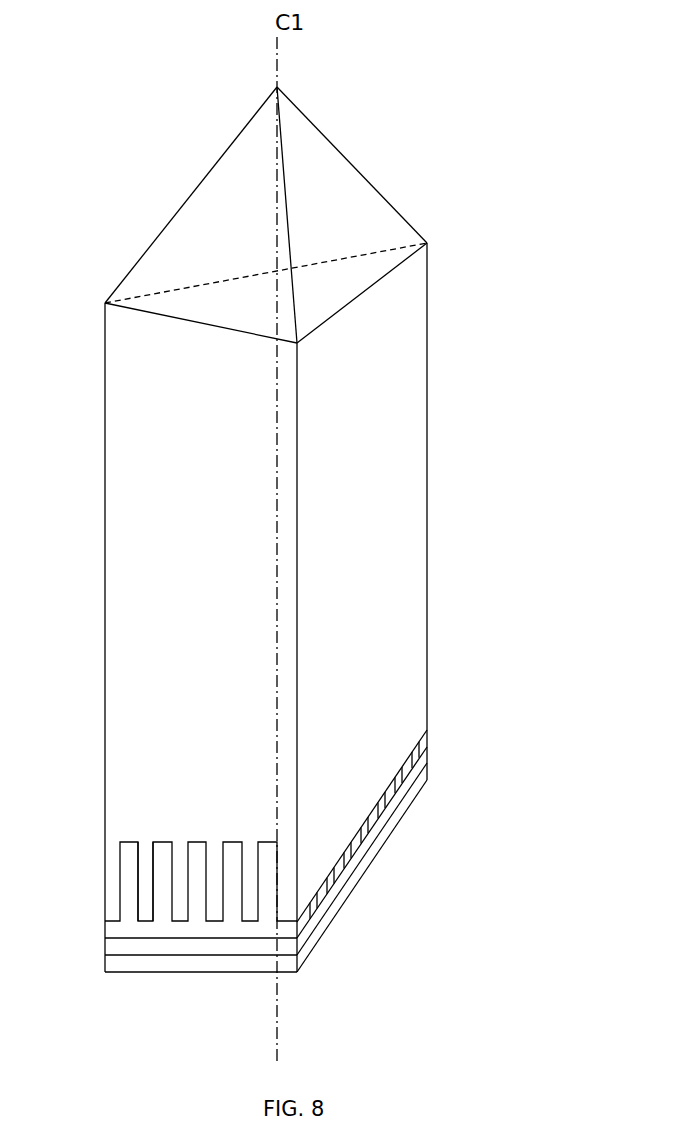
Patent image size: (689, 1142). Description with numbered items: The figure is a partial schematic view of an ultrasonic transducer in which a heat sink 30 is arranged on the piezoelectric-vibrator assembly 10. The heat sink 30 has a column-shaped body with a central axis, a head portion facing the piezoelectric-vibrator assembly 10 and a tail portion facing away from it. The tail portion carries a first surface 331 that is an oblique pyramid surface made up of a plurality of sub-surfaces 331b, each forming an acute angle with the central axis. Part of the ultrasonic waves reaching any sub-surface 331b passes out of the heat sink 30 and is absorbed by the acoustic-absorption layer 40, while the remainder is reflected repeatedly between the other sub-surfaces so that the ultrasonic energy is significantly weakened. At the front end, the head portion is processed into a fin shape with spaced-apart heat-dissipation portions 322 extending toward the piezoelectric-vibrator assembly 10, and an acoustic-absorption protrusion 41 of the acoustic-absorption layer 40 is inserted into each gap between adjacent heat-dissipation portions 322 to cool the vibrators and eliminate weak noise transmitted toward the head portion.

The piezoelectric-vibrator assembly 10 is at (120, 946).
The heat sink 30 is at (385, 522).
The acoustic-absorption layer 40 is at (135, 931).
The acoustic-absorption protrusion 41 is at (132, 863).
The heat-dissipation portions 322 is at (145, 900).
The first surface 331 is at (490, 108).
The sub-surfaces 331b is at (256, 171).